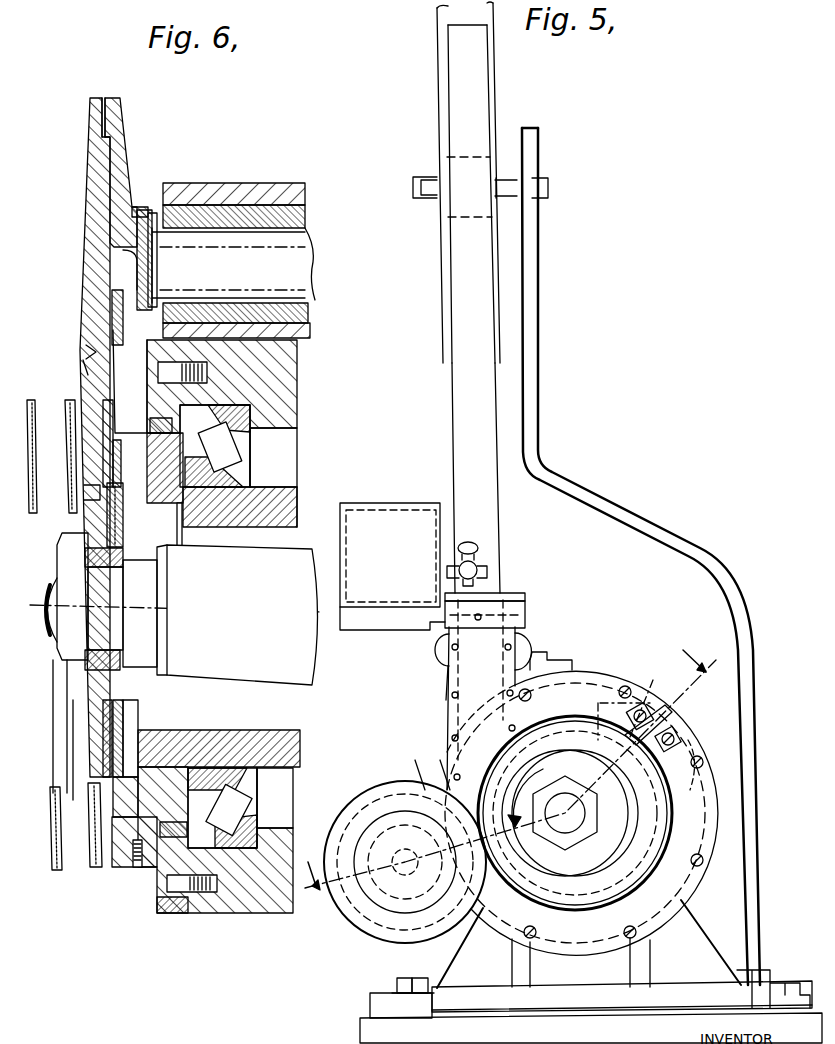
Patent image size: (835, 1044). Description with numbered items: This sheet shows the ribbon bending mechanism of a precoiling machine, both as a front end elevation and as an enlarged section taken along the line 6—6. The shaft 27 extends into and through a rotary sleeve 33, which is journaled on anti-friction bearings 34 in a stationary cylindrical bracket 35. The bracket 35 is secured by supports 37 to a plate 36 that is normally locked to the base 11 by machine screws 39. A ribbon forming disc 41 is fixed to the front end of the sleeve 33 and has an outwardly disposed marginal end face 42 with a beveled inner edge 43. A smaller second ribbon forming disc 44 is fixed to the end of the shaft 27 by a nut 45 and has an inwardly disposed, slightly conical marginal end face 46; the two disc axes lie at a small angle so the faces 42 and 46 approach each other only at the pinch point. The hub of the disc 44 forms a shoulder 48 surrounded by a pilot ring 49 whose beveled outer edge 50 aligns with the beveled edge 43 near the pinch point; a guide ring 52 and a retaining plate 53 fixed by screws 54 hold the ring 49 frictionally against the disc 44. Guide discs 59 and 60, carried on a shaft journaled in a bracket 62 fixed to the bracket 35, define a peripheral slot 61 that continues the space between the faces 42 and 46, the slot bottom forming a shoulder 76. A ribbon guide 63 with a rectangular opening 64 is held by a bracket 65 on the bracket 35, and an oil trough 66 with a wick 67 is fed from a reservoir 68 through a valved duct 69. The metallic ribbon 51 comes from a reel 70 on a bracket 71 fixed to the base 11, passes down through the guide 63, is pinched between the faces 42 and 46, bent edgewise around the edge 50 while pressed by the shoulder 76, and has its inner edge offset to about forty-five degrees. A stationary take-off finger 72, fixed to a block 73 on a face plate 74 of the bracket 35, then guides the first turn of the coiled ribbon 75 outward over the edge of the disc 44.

In FIG. 5, the base 11 is at (362, 1030).
In FIG. 6, the shaft 27 is at (232, 549).
In FIG. 6, the rotary sleeve 33 is at (264, 487).
In FIG. 6, the anti-friction bearings 34 is at (236, 449).
In FIG. 6, the stationary cylindrical bracket 35 is at (298, 384).
In FIG. 5, the stationary cylindrical bracket 35 is at (608, 674).
In FIG. 5, the plate 36 is at (374, 1003).
In FIG. 5, the supports 37 is at (703, 918).
In FIG. 5, the machine screws 39 is at (404, 978).
In FIG. 6, the ribbon forming disc 41 is at (150, 460).
In FIG. 6, the marginal end face 42 is at (152, 432).
In FIG. 6, the beveled inner edge 43 is at (103, 445).
In FIG. 6, the second ribbon forming disc 44 is at (62, 645).
In FIG. 6, the nut 45 is at (58, 546).
In FIG. 6, the marginal end face 46 is at (113, 470).
In FIG. 6, the shoulder 48 is at (117, 656).
In FIG. 6, the pilot ring 49 is at (106, 702).
In FIG. 6, the outer edge 50 is at (88, 493).
In FIG. 6, the metallic ribbon 51 is at (100, 437).
In FIG. 5, the metallic ribbon 51 is at (456, 420).
In FIG. 6, the guide ring 52 is at (179, 546).
In FIG. 6, the retaining plate 53 is at (124, 525).
In FIG. 6, the screws 54 is at (128, 557).
In FIG. 6, the guide disc 59 is at (86, 170).
In FIG. 5, the guide disc 59 is at (392, 788).
In FIG. 6, the guide disc 60 is at (122, 150).
In FIG. 6, the peripheral slot 61 is at (106, 122).
In FIG. 6, the bracket 62 is at (252, 183).
In FIG. 5, the ribbon guide 63 is at (450, 674).
In FIG. 5, the opening 64 is at (522, 648).
In FIG. 5, the bracket 65 is at (440, 656).
In FIG. 5, the oil trough 66 is at (526, 606).
In FIG. 5, the wick 67 is at (506, 594).
In FIG. 5, the reservoir 68 is at (402, 514).
In FIG. 5, the valved duct 69 is at (488, 572).
In FIG. 5, the reel 70 is at (440, 262).
In FIG. 5, the bracket 71 is at (670, 527).
In FIG. 6, the take-off finger 72 is at (130, 866).
In FIG. 5, the take-off finger 72 is at (668, 715).
In FIG. 6, the block 73 is at (150, 868).
In FIG. 5, the block 73 is at (680, 730).
In FIG. 6, the face plate 74 is at (164, 914).
In FIG. 5, the face plate 74 is at (702, 768).
In FIG. 6, the coiled ribbon 75 is at (28, 437).
In FIG. 6, the shoulder 76 is at (86, 350).
In FIG. 5, the section line 6 is at (507, 761).